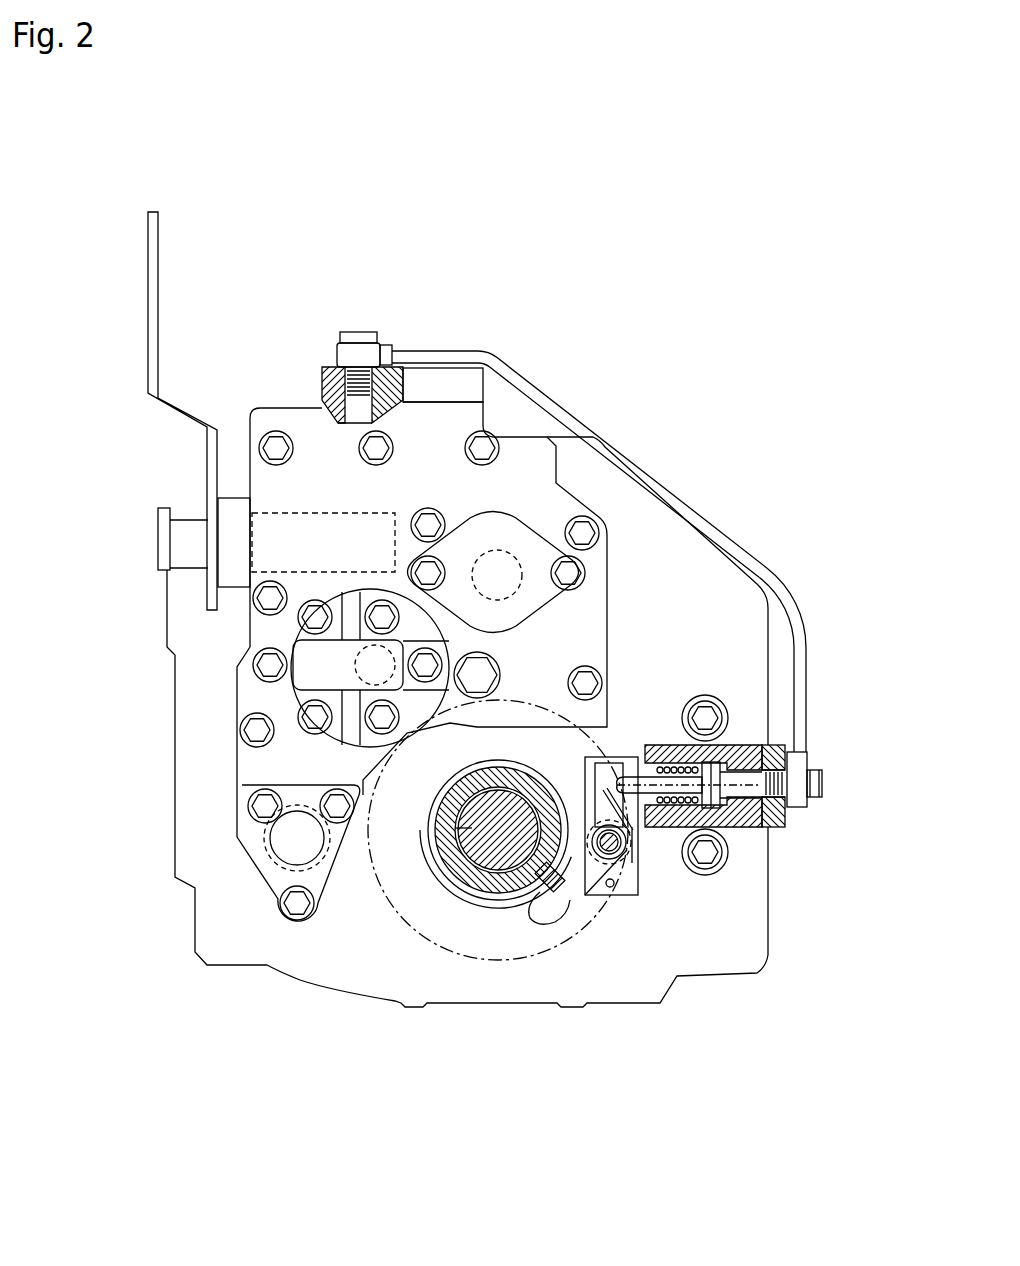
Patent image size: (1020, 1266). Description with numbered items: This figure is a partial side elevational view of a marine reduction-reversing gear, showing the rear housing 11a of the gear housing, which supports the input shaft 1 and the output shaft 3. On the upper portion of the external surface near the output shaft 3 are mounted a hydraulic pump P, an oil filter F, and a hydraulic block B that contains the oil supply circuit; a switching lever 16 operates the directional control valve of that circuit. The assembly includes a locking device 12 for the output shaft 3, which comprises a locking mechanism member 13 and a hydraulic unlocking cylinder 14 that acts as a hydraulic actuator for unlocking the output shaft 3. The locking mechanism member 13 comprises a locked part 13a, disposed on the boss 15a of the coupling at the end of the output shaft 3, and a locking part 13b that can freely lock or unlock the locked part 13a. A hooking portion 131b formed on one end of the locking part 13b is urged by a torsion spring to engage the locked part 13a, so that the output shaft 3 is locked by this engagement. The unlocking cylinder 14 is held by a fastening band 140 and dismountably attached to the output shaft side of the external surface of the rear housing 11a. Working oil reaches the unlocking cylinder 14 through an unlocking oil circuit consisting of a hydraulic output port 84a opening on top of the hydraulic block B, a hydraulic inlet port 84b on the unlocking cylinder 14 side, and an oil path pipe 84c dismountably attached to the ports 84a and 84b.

The input shaft 1 is at (515, 550).
The output shaft 3 is at (455, 830).
The rear housing 11a is at (663, 577).
The locking device 12 is at (655, 921).
The locking mechanism member 13 is at (555, 888).
The locked part 13a is at (513, 890).
The locking part 13b is at (587, 887).
The hooking portion 131b is at (522, 893).
The hydraulic unlocking cylinder 14 is at (718, 915).
The fastening band 140 is at (728, 858).
The boss 15a is at (455, 868).
The switching lever 16 is at (145, 342).
The hydraulic output port 84a is at (322, 395).
The hydraulic inlet port 84b is at (788, 800).
The oil path pipe 84c is at (653, 487).
The hydraulic block B is at (806, 640).
The hydraulic pump P is at (322, 670).
The oil filter F is at (287, 865).